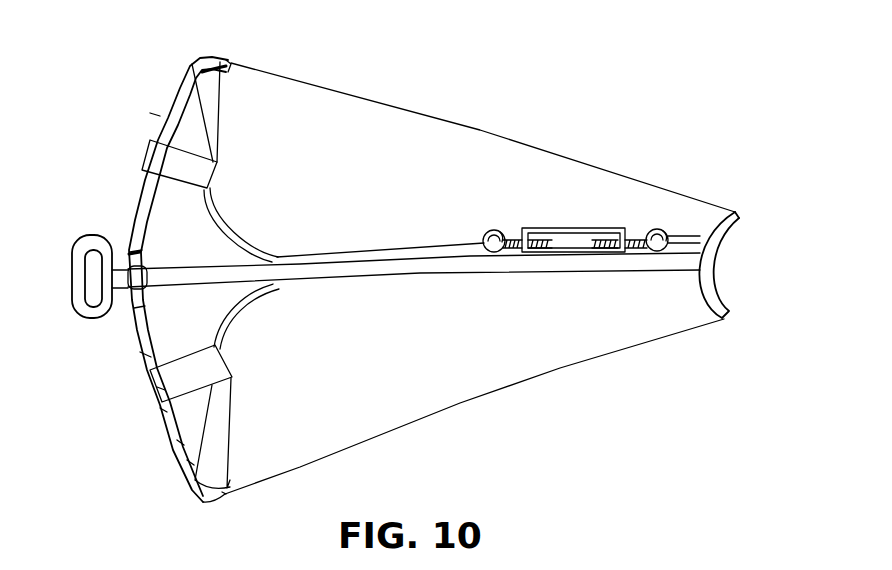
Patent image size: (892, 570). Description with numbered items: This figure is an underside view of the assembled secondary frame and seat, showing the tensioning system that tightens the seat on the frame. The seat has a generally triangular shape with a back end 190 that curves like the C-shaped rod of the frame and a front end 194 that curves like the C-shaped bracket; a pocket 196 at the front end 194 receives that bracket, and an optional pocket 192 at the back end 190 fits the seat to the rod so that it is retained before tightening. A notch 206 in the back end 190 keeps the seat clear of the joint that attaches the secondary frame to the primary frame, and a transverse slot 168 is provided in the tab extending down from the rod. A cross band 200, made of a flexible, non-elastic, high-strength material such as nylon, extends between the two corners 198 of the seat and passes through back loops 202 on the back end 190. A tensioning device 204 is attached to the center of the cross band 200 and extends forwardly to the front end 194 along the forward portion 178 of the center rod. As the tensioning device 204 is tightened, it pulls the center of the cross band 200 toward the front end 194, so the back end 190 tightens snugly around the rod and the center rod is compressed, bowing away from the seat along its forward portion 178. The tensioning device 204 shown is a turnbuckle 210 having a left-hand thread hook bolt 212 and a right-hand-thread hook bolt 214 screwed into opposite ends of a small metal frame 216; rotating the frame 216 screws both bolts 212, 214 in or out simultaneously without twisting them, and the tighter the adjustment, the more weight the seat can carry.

The slot 168 is at (90, 285).
The forward portion of the center rod 178 is at (400, 266).
The seat back end 190 is at (130, 211).
The pocket 192 is at (152, 164).
The front end of the seat 194 is at (716, 283).
The pocket 196 is at (738, 226).
The corners of the seat 198 is at (222, 62).
The cross band 200 is at (256, 306).
The back loops 202 is at (219, 166).
The tensioning device 204 is at (576, 211).
The notch 206 is at (140, 262).
The turnbuckle 210 is at (577, 220).
The left-hand thread hook bolt 212 is at (495, 229).
The right-hand-thread hook bolt 214 is at (659, 229).
The frame 216 is at (604, 231).